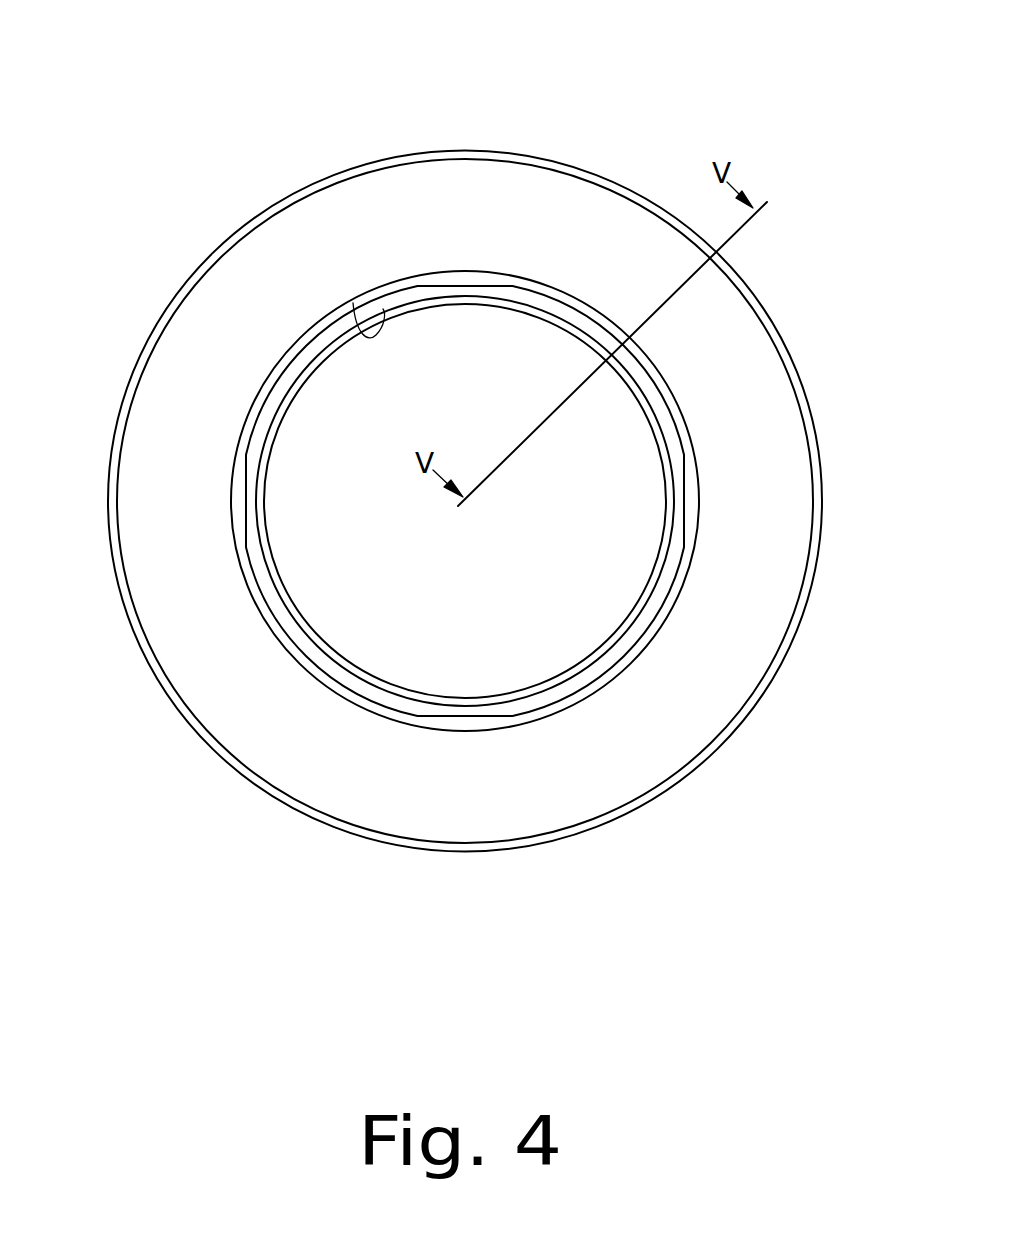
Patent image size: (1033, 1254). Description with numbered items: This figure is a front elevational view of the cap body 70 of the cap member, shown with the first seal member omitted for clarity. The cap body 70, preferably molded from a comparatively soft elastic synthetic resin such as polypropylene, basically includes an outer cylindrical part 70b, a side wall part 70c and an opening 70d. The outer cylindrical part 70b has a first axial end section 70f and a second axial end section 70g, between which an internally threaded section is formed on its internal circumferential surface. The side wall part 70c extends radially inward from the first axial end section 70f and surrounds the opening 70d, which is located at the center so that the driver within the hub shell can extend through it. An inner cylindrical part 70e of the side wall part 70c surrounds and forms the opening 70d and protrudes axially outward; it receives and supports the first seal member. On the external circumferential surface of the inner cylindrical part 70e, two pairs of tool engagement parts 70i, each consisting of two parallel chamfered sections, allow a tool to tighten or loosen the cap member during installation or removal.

The cap body 70 is at (646, 130).
The outer cylindrical part 70b is at (731, 266).
The side wall part 70c is at (272, 310).
The opening 70d is at (353, 303).
The inner cylindrical part 70e is at (660, 417).
The first axial end section 70f is at (568, 168).
The second axial end section 70g is at (513, 150).
The tool engagement parts 70i is at (462, 287).